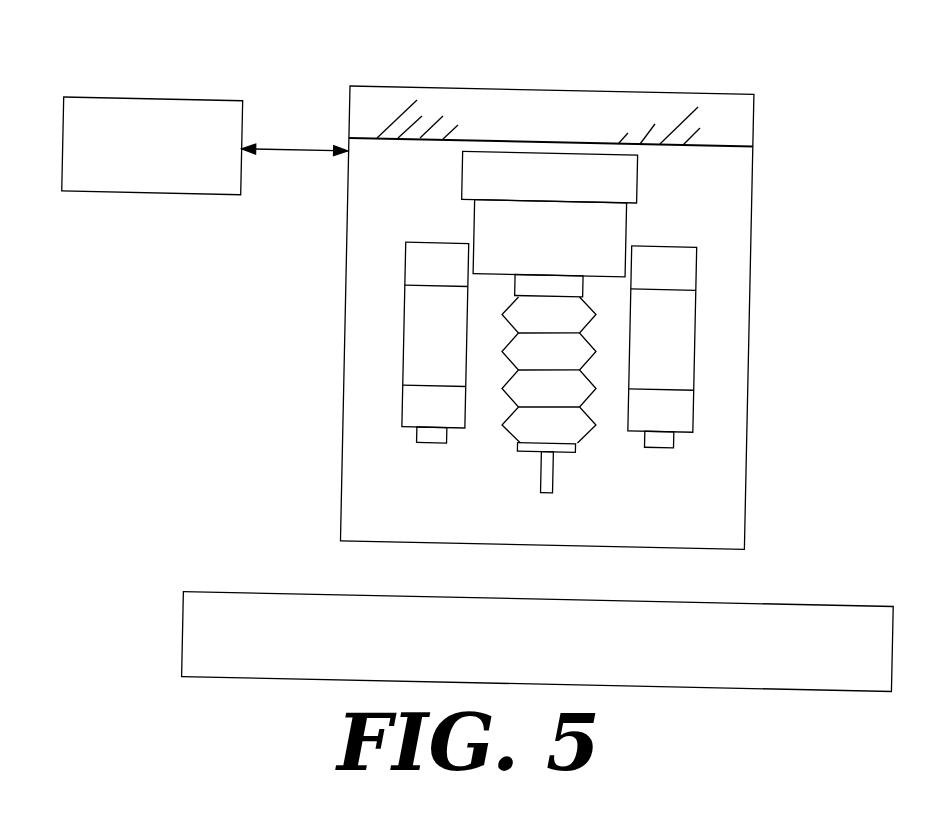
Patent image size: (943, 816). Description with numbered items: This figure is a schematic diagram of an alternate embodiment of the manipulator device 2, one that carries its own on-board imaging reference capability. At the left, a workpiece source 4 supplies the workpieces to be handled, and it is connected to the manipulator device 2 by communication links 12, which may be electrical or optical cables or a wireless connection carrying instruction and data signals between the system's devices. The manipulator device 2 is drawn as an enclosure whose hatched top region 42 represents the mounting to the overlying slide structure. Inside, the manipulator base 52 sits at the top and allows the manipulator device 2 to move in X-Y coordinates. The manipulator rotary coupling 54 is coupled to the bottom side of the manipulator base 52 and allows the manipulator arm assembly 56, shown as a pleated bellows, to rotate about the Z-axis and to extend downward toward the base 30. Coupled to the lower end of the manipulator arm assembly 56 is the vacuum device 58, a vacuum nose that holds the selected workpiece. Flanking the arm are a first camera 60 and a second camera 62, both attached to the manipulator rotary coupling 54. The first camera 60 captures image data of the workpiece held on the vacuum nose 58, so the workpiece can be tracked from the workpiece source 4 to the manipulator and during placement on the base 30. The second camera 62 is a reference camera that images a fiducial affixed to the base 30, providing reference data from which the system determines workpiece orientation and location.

The manipulator device 2 is at (485, 85).
The workpiece source 4 is at (64, 133).
The communication links 12 is at (293, 149).
The base 30 is at (195, 640).
The chamber top wall 42 is at (754, 115).
The manipulator base 52 is at (639, 172).
The manipulator rotary coupling 54 is at (629, 217).
The manipulator arm assembly 56 is at (515, 432).
The vacuum device 58 is at (561, 467).
The first camera 60 is at (410, 329).
The second camera 62 is at (698, 326).